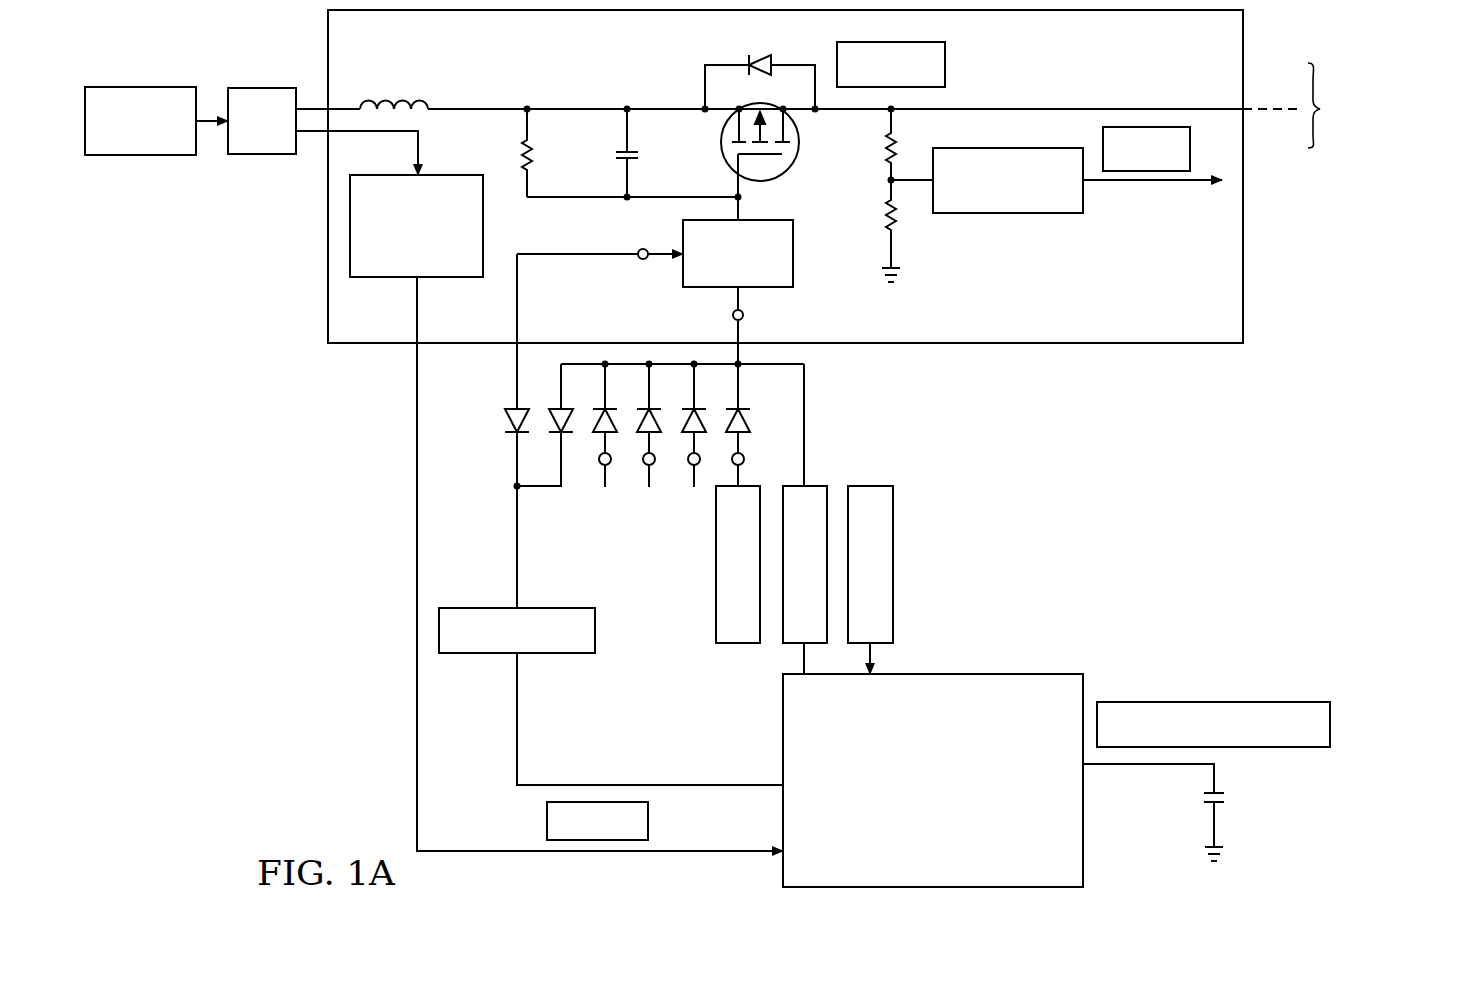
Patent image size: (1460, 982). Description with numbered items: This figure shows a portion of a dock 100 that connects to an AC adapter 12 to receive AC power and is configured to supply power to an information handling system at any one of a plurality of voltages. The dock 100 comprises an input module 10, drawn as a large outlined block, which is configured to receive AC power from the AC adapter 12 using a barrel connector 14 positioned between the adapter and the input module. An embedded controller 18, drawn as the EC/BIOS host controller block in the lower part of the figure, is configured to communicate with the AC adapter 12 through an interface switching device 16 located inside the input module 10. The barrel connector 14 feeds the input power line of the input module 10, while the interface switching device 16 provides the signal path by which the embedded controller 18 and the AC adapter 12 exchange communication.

The dock 100 is at (262, 524).
The input module 10 is at (328, 52).
The AC adapter 12 is at (140, 87).
The barrel connector 14 is at (275, 137).
The interface switching device 16 is at (395, 278).
The embedded controller 18 is at (1085, 825).